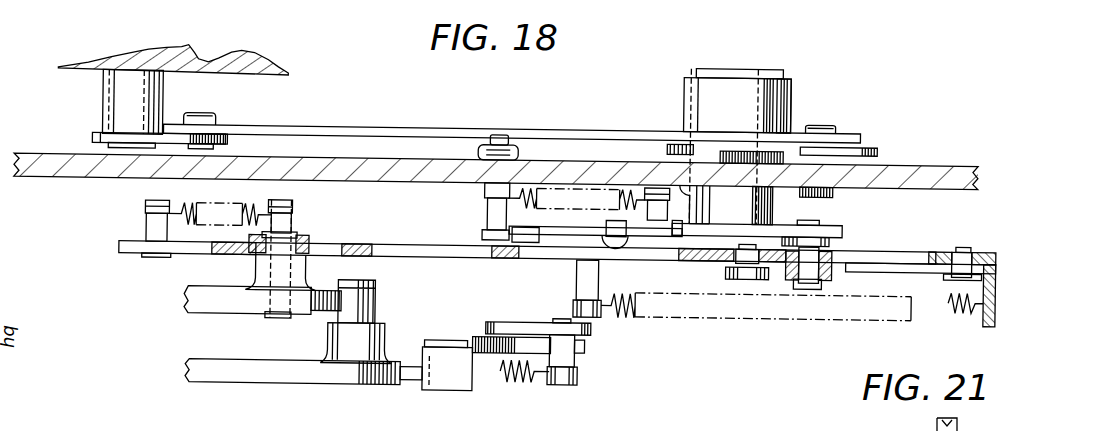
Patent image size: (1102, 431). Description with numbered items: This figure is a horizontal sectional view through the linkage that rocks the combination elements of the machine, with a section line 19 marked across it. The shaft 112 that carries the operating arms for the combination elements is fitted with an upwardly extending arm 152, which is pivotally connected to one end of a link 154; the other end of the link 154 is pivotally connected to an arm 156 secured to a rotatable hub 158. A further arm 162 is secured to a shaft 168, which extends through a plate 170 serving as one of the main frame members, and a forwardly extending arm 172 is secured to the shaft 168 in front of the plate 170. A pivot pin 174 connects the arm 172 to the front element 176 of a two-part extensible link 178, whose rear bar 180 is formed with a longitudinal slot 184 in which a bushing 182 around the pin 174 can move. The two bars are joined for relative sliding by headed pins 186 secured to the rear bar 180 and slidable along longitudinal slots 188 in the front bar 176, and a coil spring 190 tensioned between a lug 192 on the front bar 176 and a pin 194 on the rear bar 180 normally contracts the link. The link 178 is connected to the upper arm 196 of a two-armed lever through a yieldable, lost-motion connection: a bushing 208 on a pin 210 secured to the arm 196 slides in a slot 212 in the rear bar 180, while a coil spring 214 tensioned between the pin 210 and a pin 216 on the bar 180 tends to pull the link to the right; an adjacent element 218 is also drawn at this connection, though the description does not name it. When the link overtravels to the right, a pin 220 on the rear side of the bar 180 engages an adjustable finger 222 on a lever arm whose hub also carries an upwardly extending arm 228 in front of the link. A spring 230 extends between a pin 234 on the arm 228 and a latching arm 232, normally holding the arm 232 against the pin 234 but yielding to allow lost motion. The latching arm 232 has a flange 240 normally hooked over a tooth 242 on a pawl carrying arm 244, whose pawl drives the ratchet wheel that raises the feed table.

In FIG. 18, the section line 19- 19 is at (448, 232).
In FIG. 18, the shaft 112 is at (112, 95).
In FIG. 18, the upwardly extending arm 152 is at (225, 132).
In FIG. 18, the link 154 is at (372, 123).
In FIG. 18, the arm 156 is at (878, 138).
In FIG. 18, the rotatable hub 158 is at (792, 81).
In FIG. 18, the arm 162 is at (782, 66).
In FIG. 18, the shaft 168 is at (683, 81).
In FIG. 18, the plate 170 is at (950, 157).
In FIG. 18, the forwardly extending arm 172 is at (838, 218).
In FIG. 18, the pivot pin 174 is at (812, 276).
In FIG. 18, the front element 176 is at (998, 254).
In FIG. 18, the extensible link 178 is at (983, 236).
In FIG. 21, the extensible link 178 is at (869, 419).
In FIG. 18, the rear bar 180 is at (118, 245).
In FIG. 21, the rear bar 180 is at (903, 427).
In FIG. 18, the bushing 182 is at (835, 275).
In FIG. 18, the longitudinal slot 184 is at (898, 239).
In FIG. 18, the headed pins 186 is at (960, 267).
In FIG. 18, the longitudinal slots 188 is at (653, 258).
In FIG. 18, the coil spring 190 is at (623, 304).
In FIG. 18, the lug 192 is at (997, 303).
In FIG. 18, the pin 194 is at (578, 282).
In FIG. 18, the upper arm 196 is at (188, 300).
In FIG. 18, the bushing 208 is at (307, 229).
In FIG. 18, the pin 210 is at (283, 201).
In FIG. 18, the slot 212 is at (332, 236).
In FIG. 18, the coil spring 214 is at (229, 200).
In FIG. 18, the pin 216 is at (145, 201).
In FIG. 18, the block 218 is at (375, 283).
In FIG. 18, the pin 220 is at (517, 233).
In FIG. 18, the adjustable finger 222 is at (563, 232).
In FIG. 18, the upwardly extending arm 228 is at (590, 320).
In FIG. 18, the spring 230 is at (523, 373).
In FIG. 18, the latching arm 232 is at (452, 306).
In FIG. 18, the pin 234 is at (577, 372).
In FIG. 18, the flange 240 is at (458, 374).
In FIG. 18, the tooth 242 is at (413, 377).
In FIG. 18, the pawl carrying arm 244 is at (257, 366).